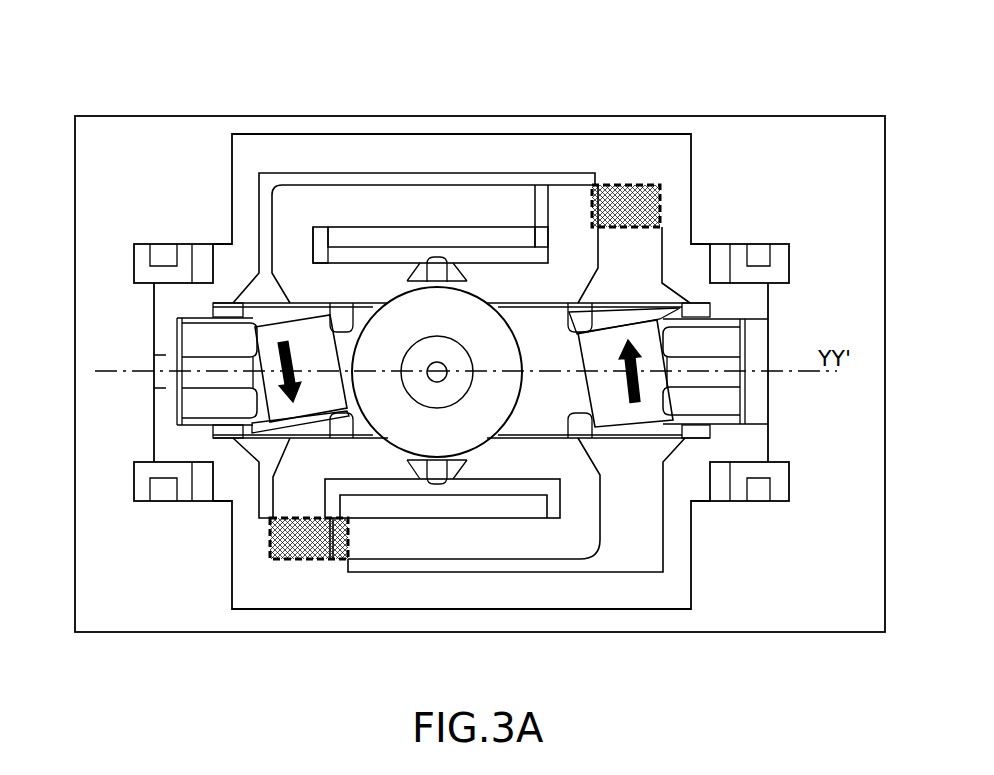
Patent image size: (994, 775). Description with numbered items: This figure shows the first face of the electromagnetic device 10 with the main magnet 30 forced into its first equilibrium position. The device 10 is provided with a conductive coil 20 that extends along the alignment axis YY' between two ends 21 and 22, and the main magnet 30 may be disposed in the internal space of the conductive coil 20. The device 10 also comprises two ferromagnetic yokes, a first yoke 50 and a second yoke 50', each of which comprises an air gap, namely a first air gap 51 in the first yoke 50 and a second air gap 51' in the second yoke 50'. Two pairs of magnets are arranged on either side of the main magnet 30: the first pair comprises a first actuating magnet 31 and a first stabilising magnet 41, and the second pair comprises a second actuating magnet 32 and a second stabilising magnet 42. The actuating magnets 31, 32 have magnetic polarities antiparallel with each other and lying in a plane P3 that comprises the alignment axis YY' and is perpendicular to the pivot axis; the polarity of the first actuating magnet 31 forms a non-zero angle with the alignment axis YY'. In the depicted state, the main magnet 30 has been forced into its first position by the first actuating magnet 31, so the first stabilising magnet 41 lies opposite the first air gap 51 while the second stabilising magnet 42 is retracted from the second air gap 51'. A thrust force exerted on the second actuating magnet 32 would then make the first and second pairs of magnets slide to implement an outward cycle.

The electromagnetic device 10 is at (136, 80).
The plane P3 is at (792, 116).
The conductive coil 20 is at (368, 237).
The first end of the conductive coil 21 is at (326, 238).
The second end of the conductive coil 22 is at (547, 247).
The main magnet 30 is at (433, 297).
The first actuating magnet 31 is at (263, 338).
The second actuating magnet 32 is at (647, 338).
The first stabilising magnet 41 is at (310, 560).
The second stabilising magnet 42 is at (633, 185).
The first yoke 50 is at (436, 564).
The second yoke 50' is at (435, 185).
The first air gap 51 is at (323, 604).
The second air gap 51' is at (531, 147).